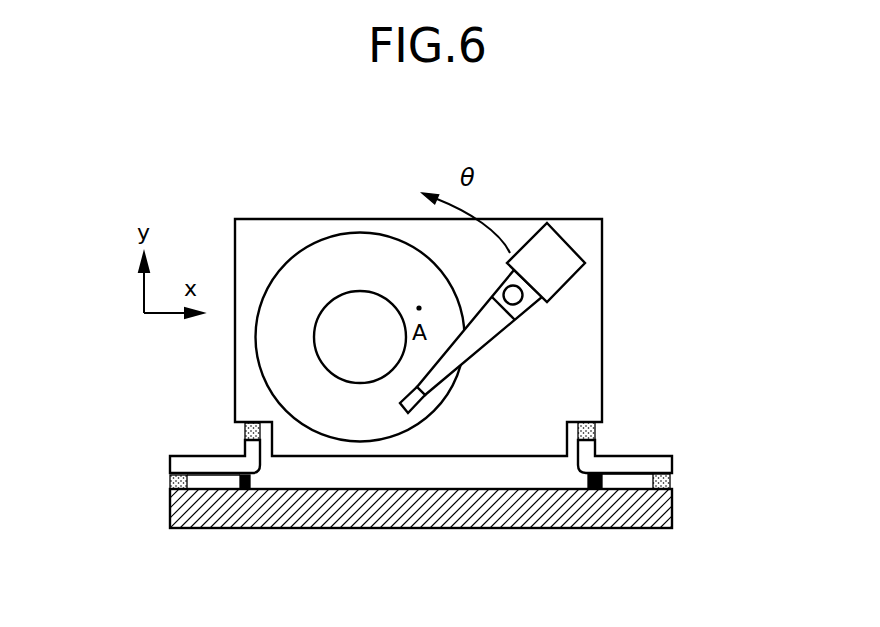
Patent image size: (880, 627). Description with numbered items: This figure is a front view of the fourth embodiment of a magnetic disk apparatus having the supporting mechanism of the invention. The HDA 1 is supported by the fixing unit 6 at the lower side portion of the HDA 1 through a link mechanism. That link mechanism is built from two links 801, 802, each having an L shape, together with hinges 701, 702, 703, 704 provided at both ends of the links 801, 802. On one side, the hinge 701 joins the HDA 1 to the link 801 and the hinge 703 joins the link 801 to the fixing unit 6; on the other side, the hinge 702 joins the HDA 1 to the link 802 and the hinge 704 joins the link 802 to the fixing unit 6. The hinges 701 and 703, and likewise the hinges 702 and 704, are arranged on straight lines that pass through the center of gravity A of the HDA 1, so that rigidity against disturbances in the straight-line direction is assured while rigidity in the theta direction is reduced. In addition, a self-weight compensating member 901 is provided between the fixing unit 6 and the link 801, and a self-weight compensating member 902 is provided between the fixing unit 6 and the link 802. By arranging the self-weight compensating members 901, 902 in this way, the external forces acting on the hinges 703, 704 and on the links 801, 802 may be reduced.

The HDA 1 is at (598, 288).
The fixing unit 6 is at (417, 508).
The hinge 701 is at (245, 430).
The hinge 702 is at (598, 430).
The hinge 703 is at (168, 483).
The hinge 704 is at (668, 477).
The link 801 is at (175, 468).
The link 802 is at (658, 460).
The self-weight compensating member 901 is at (251, 489).
The self-weight compensating member 902 is at (580, 489).